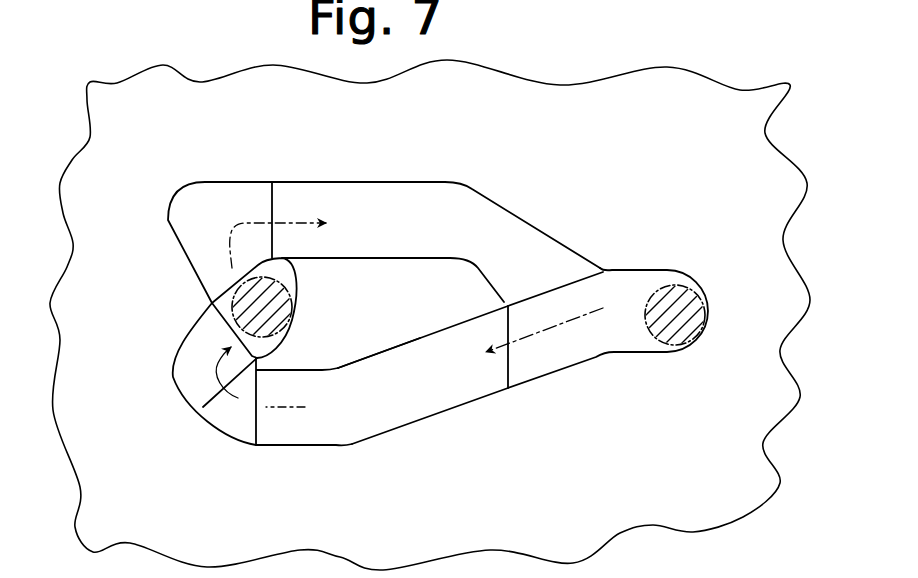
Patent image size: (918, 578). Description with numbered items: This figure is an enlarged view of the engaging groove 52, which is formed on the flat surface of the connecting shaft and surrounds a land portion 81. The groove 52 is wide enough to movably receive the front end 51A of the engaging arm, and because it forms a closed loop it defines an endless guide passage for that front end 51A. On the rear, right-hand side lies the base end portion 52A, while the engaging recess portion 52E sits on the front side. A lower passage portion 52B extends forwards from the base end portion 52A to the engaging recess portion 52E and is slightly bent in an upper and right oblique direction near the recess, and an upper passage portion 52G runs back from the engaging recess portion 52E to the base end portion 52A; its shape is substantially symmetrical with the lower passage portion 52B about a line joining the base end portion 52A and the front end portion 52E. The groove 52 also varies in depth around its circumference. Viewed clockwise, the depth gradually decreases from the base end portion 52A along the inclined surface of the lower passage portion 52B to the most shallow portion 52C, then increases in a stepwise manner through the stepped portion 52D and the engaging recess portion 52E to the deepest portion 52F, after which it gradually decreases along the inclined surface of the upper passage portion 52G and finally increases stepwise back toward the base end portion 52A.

The engaging groove 52 is at (394, 318).
The base end portion 52A is at (622, 348).
The lower passage portion 52B is at (468, 392).
The most shallow portion 52C is at (232, 430).
The stepped portion 52D is at (178, 376).
The engaging recess portion 52E is at (210, 298).
The deepest portion 52F is at (250, 186).
The upper passage portion 52G is at (457, 186).
The front end of the engaging arm 51A is at (293, 303).
The land portion 81 is at (345, 343).